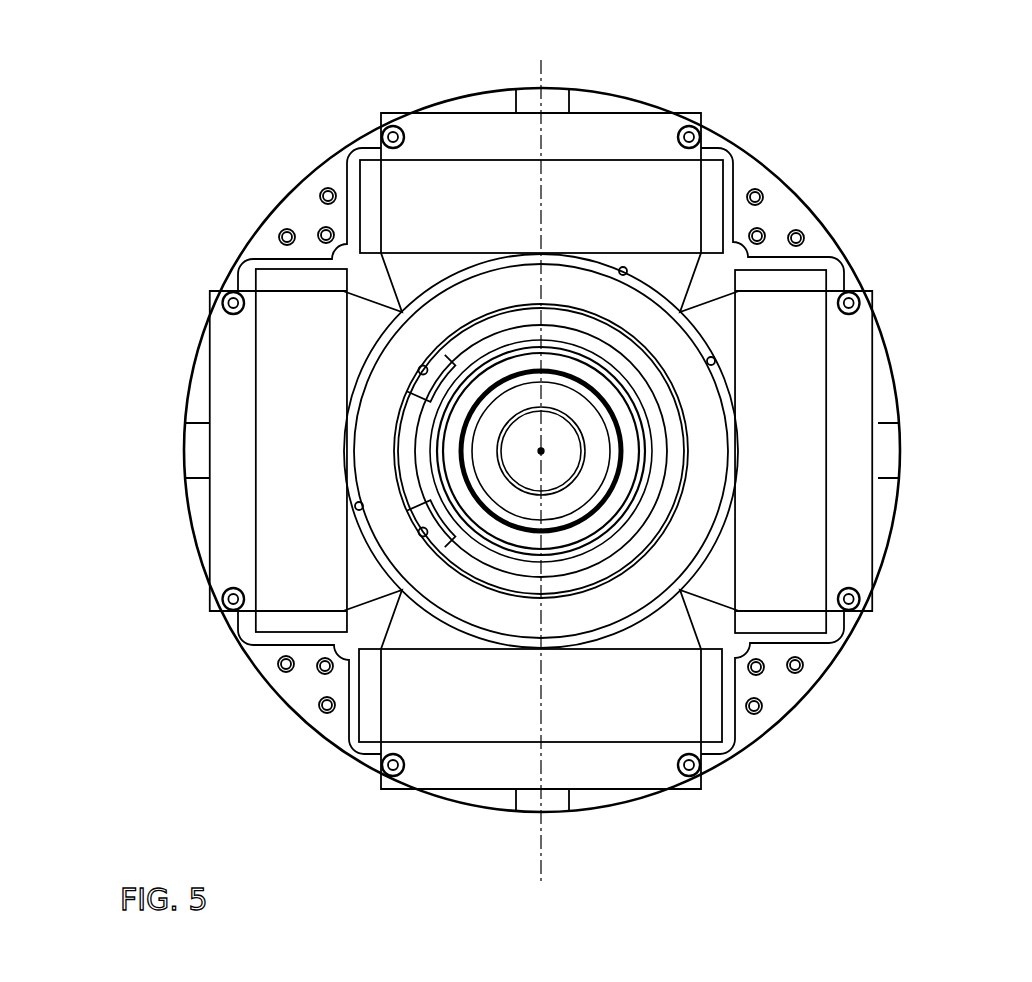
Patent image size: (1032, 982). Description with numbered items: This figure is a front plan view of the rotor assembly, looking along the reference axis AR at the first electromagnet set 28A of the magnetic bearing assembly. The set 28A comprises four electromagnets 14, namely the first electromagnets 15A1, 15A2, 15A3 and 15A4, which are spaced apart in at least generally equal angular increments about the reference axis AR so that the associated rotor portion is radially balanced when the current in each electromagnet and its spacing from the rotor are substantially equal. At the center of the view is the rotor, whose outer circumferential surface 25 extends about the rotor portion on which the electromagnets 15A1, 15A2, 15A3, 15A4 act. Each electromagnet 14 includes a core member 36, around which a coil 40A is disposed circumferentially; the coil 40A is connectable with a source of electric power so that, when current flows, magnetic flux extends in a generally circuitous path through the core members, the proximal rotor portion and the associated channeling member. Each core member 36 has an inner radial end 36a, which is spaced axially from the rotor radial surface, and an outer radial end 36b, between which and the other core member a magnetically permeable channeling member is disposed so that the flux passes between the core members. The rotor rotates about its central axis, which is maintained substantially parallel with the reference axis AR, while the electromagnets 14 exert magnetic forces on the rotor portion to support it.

The electromagnet 14 is at (430, 78).
The first electromagnet 15A1 is at (604, 112).
The first electromagnet 15A2 is at (886, 450).
The first electromagnet 15A3 is at (556, 800).
The first electromagnet 15A4 is at (203, 383).
The outer circumferential surface 25 is at (737, 497).
The first electromagnet set 28A is at (208, 216).
The core member 36 is at (424, 128).
The inner radial end 36a is at (621, 262).
The outer radial end 36b is at (489, 112).
The coil 40A is at (388, 180).
The reference axis AR is at (541, 451).